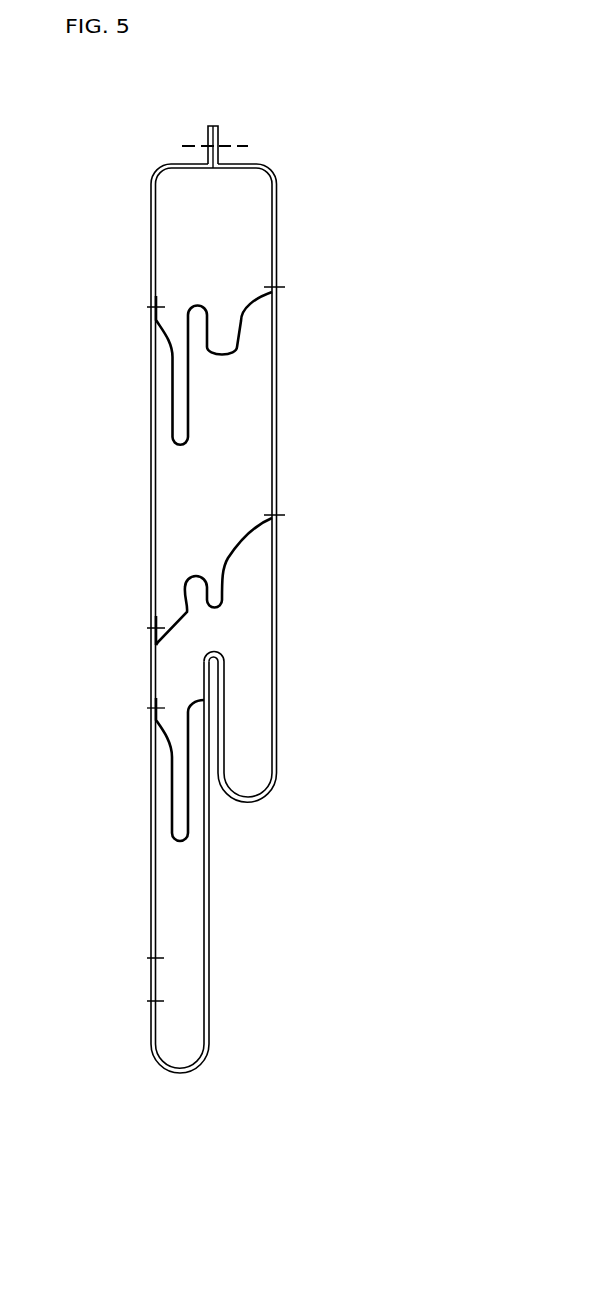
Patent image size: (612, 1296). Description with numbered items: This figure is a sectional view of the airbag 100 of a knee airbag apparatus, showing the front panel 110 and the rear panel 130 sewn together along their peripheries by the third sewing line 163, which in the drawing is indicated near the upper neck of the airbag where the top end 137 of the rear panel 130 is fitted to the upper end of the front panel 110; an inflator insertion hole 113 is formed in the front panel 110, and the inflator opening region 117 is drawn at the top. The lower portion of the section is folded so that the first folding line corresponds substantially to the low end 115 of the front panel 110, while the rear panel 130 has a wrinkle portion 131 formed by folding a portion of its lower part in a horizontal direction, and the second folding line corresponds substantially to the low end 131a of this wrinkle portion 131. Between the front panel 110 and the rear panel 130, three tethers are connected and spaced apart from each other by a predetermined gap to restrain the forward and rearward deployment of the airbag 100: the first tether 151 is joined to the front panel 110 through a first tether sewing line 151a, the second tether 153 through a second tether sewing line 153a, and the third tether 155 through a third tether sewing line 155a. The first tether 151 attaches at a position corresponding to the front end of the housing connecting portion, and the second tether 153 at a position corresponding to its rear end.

The airbag 100 is at (247, 604).
The front panel 110 is at (149, 656).
The inflator insertion hole 113 is at (152, 981).
The low end of the front panel 115 is at (181, 1074).
The spout 117 is at (208, 127).
The rear panel 130 is at (303, 534).
The wrinkle portion 131 is at (303, 769).
The low end of the wrinkle portion 131a is at (258, 806).
The top end of the rear panel 137 is at (218, 127).
The first tether 151 is at (131, 769).
The first tether sewing line 151a is at (153, 716).
The second tether 153 is at (200, 582).
The second tether sewing line 153a is at (153, 640).
The third tether 155 is at (200, 366).
The third tether sewing line 155a is at (153, 318).
The third sewing line 163 is at (240, 146).